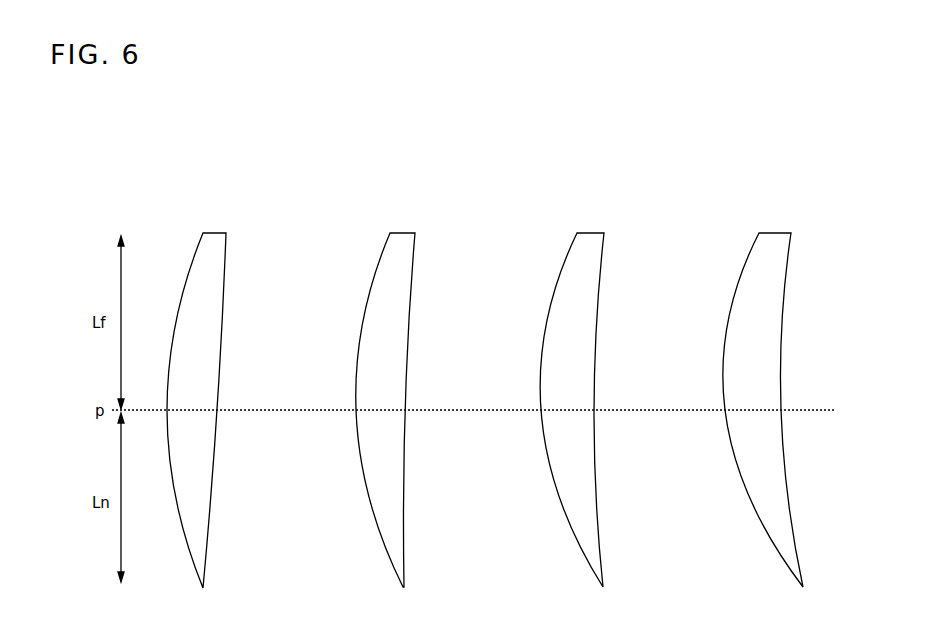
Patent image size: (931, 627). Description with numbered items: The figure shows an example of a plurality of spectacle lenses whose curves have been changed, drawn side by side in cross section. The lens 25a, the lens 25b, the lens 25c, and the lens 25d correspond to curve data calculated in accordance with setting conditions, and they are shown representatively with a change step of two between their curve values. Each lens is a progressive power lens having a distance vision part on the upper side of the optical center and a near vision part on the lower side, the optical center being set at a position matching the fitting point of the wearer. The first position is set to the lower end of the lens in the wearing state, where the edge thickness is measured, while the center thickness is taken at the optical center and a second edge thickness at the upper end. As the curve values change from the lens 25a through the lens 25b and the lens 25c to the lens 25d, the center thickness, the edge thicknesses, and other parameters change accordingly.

The lens 25a is at (220, 233).
The lens 25b is at (403, 233).
The lens 25c is at (590, 233).
The lens 25d is at (773, 233).